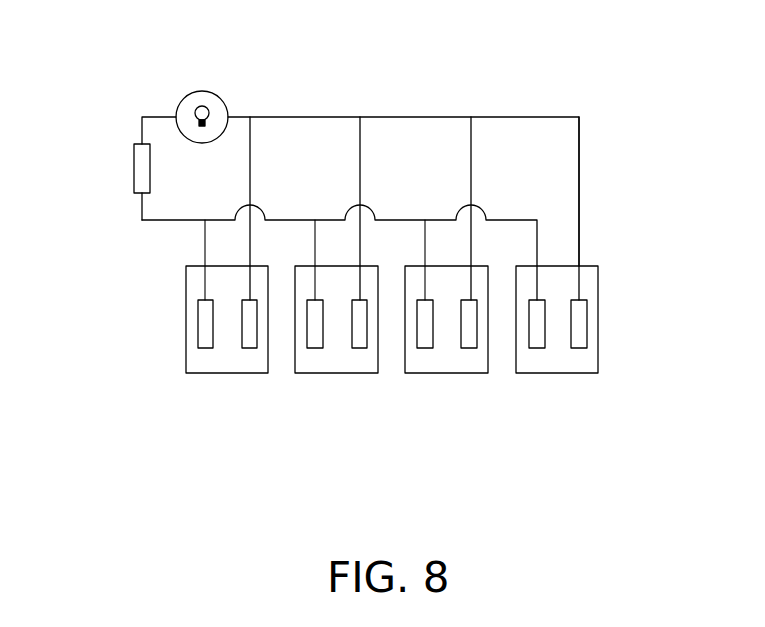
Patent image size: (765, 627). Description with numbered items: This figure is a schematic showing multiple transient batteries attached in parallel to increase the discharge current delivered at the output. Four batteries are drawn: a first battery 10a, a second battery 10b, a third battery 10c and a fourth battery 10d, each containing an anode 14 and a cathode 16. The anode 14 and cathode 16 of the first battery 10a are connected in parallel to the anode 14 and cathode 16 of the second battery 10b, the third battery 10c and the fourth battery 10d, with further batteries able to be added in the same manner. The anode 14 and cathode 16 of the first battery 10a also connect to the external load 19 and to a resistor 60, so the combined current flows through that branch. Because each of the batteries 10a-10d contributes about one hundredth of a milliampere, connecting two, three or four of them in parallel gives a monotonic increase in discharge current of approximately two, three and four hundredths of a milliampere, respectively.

The resistor 60 is at (133, 153).
The external load 19 is at (210, 109).
The first battery 10a is at (187, 288).
The second battery 10b is at (303, 360).
The third battery 10c is at (407, 365).
The fourth battery 10d is at (592, 280).
The anode 14 is at (207, 347).
The cathode 16 is at (252, 347).